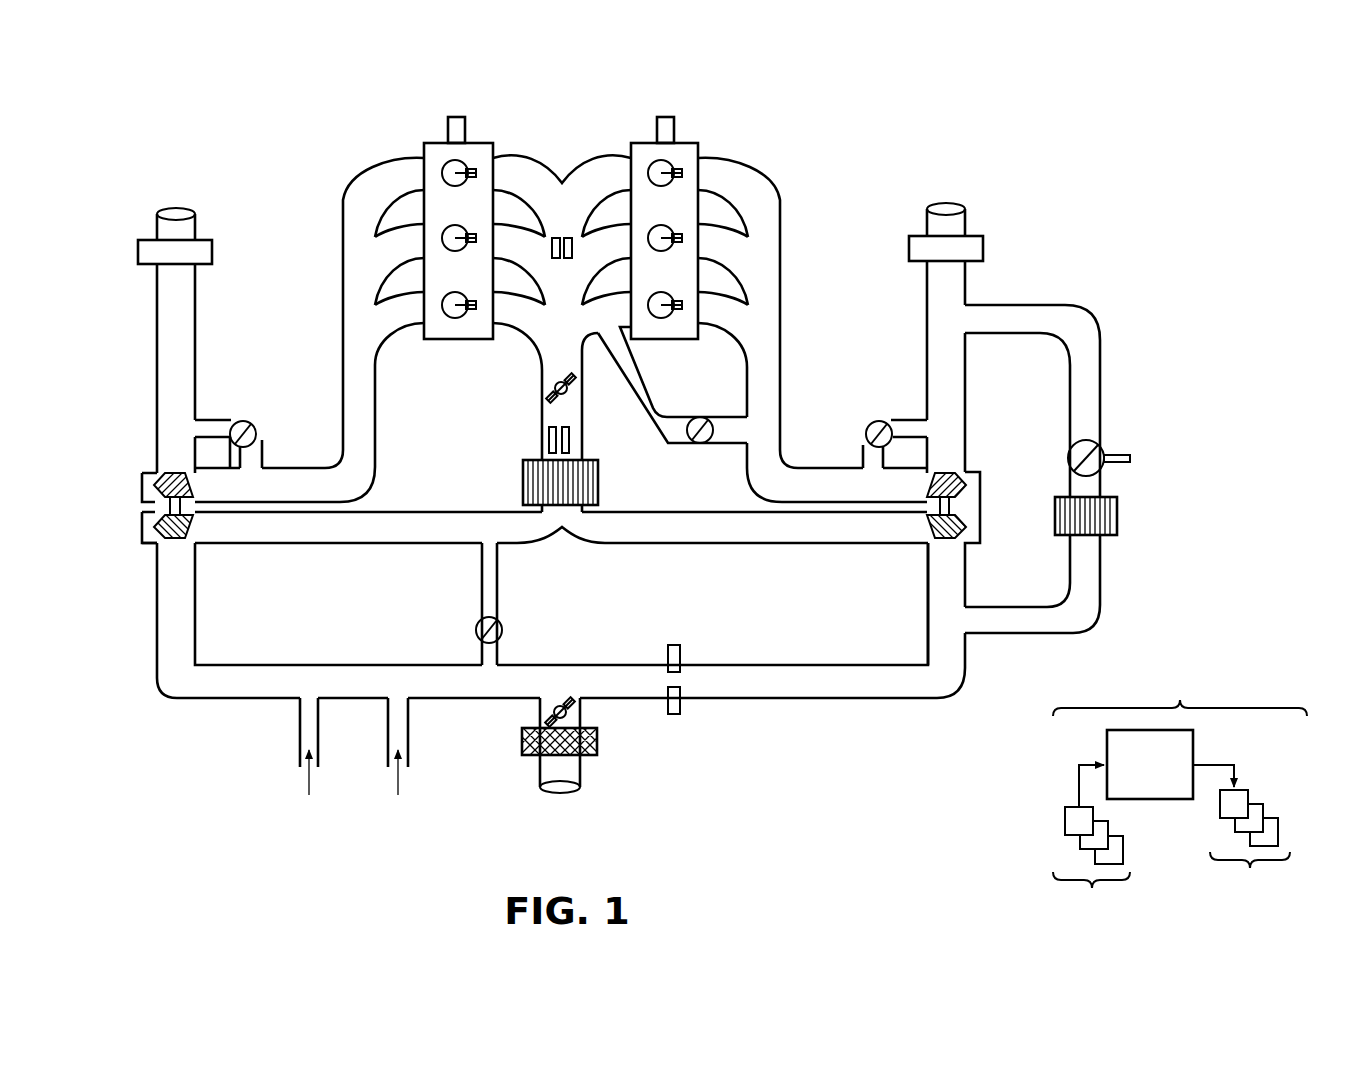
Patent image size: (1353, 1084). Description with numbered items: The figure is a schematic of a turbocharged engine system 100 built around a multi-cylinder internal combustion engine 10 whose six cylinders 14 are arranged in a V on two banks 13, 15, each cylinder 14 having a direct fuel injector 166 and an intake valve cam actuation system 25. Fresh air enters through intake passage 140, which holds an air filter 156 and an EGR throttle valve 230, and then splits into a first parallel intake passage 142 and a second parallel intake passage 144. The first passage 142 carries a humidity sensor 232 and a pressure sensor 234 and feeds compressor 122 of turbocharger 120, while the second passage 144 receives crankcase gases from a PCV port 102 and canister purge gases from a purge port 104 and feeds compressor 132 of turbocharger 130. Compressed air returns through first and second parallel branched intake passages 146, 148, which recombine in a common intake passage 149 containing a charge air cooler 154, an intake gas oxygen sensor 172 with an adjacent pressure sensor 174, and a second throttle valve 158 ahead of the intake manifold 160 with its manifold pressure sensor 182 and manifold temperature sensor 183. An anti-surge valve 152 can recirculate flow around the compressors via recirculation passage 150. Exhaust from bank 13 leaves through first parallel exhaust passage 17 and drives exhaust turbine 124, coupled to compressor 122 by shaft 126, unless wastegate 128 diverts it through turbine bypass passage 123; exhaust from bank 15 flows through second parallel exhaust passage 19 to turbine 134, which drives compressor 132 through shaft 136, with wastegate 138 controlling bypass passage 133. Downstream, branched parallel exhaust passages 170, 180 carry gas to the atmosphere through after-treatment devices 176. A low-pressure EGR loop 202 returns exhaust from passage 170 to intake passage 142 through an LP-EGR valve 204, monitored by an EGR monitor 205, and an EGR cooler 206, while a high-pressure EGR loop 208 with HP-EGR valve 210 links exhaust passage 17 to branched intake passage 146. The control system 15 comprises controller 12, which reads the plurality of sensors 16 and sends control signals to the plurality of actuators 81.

The internal combustion engine 10 is at (932, 144).
The turbocharged engine system 100 is at (1220, 139).
The controller 12 is at (1156, 768).
The first cylinder bank 13 is at (688, 143).
The cylinder 14 is at (666, 226).
The second cylinder bank 15 is at (437, 143).
The sensors 16 is at (1091, 865).
The first parallel exhaust passage 17 is at (781, 404).
The second parallel exhaust passage 19 is at (342, 396).
The intake valve cam actuation system 25 is at (458, 118).
The actuators 81 is at (1250, 848).
The PCV port 102 is at (300, 748).
The purge port 104 is at (388, 748).
The turbocharger 120 is at (949, 461).
The compressor 122 is at (940, 540).
The turbine bypass passage 123 is at (912, 418).
The exhaust turbine 124 is at (955, 478).
The shaft 126 is at (949, 506).
The wastegate 128 is at (867, 426).
The turbocharger 130 is at (174, 462).
The compressor 132 is at (195, 547).
The turbine bypass passage 133 is at (212, 420).
The exhaust turbine 134 is at (152, 480).
The shaft 136 is at (168, 510).
The wastegate 138 is at (254, 425).
The intake passage 140 is at (540, 775).
The first parallel intake passage 142 is at (738, 665).
The second parallel intake passage 144 is at (326, 665).
The first parallel branched intake passage 146 is at (735, 546).
The second parallel branched intake passage 148 is at (302, 546).
The common intake passage 149 is at (541, 370).
The recirculation passage 150 is at (498, 586).
The anti-surge valve 152 is at (502, 632).
The charge air cooler 154 is at (598, 482).
The air filter 156 is at (598, 741).
The second air intake throttle valve 158 is at (559, 381).
The intake manifold 160 is at (560, 170).
The fuel injector 166 is at (678, 236).
The branched parallel exhaust passage 170 is at (927, 302).
The intake gas oxygen sensor 172 is at (549, 440).
The pressure sensor 174 is at (569, 434).
The exhaust after-treatment device 176 is at (212, 254).
The branched parallel exhaust passage 180 is at (197, 306).
The intake manifold pressure sensor 182 is at (553, 258).
The intake manifold temperature sensor 183 is at (570, 258).
The low-pressure EGR loop 202 is at (1101, 376).
The LP-EGR valve 204 is at (1088, 441).
The EGR monitor 205 is at (1130, 456).
The EGR cooler 206 is at (1118, 516).
The high-pressure EGR loop 208 is at (668, 446).
The HP-EGR valve 210 is at (700, 418).
The EGR throttle valve 230 is at (562, 705).
The humidity sensor 232 is at (678, 645).
The pressure sensor 234 is at (682, 714).